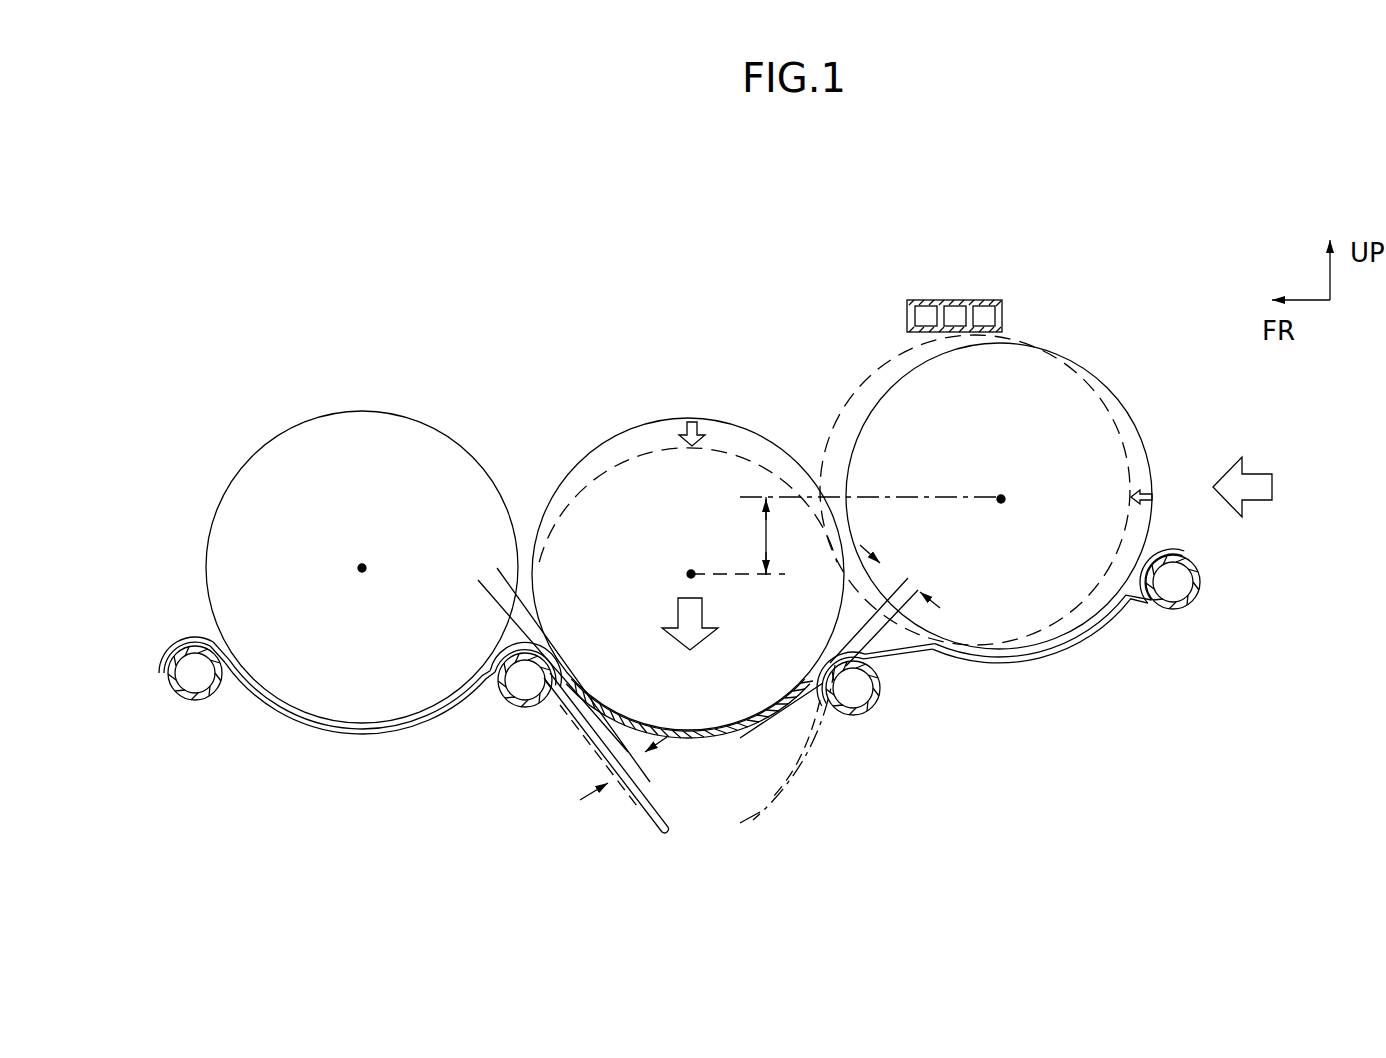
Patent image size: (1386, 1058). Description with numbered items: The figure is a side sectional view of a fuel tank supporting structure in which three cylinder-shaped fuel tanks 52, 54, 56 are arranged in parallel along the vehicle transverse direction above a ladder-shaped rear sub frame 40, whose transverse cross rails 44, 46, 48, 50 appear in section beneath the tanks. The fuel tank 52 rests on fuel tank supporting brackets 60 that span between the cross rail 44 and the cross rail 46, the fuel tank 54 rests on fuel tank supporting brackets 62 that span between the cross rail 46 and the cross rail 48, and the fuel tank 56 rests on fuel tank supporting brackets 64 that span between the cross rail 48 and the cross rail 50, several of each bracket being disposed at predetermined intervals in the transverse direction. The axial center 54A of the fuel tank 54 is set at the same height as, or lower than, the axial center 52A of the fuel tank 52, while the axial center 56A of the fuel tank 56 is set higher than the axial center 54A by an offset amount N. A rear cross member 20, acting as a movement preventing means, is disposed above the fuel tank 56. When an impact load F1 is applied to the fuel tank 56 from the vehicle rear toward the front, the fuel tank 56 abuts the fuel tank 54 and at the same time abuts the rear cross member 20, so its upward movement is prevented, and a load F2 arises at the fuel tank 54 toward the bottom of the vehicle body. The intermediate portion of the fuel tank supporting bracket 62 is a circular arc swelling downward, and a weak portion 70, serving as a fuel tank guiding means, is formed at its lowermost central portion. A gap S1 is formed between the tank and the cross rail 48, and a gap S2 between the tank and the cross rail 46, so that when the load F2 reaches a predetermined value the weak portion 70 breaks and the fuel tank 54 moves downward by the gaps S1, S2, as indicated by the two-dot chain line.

The rear cross member 20 is at (957, 300).
The rear sub frame 40 is at (172, 692).
The cross rail 44 is at (205, 699).
The cross rail 46 is at (508, 703).
The cross rail 48 is at (862, 716).
The cross rail 50 is at (1188, 606).
The fuel tank 52 is at (270, 426).
The axial center 52A is at (363, 567).
The fuel tank 54 is at (594, 476).
The axial center 54A is at (690, 572).
The fuel tank 56 is at (1133, 456).
The axial center 56A is at (1002, 498).
The fuel tank supporting bracket 60 is at (368, 736).
The fuel tank supporting bracket 62 is at (727, 744).
The fuel tank supporting bracket 64 is at (1046, 664).
The weak portion 70 is at (654, 728).
The offset amount N is at (766, 535).
The impact load F1 is at (1249, 466).
The load F2 is at (704, 611).
The gap S1 is at (620, 806).
The gap S2 is at (897, 571).